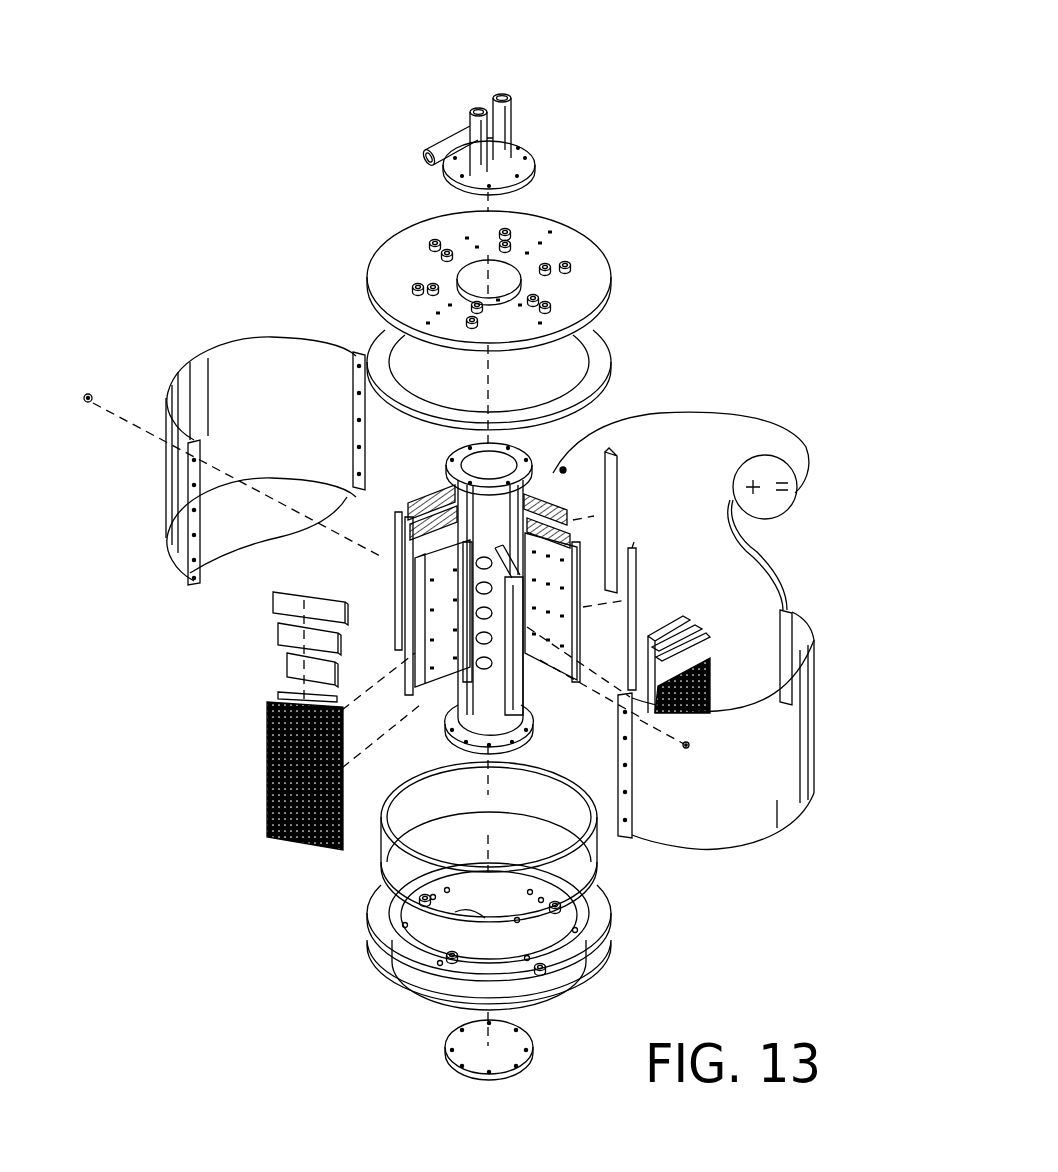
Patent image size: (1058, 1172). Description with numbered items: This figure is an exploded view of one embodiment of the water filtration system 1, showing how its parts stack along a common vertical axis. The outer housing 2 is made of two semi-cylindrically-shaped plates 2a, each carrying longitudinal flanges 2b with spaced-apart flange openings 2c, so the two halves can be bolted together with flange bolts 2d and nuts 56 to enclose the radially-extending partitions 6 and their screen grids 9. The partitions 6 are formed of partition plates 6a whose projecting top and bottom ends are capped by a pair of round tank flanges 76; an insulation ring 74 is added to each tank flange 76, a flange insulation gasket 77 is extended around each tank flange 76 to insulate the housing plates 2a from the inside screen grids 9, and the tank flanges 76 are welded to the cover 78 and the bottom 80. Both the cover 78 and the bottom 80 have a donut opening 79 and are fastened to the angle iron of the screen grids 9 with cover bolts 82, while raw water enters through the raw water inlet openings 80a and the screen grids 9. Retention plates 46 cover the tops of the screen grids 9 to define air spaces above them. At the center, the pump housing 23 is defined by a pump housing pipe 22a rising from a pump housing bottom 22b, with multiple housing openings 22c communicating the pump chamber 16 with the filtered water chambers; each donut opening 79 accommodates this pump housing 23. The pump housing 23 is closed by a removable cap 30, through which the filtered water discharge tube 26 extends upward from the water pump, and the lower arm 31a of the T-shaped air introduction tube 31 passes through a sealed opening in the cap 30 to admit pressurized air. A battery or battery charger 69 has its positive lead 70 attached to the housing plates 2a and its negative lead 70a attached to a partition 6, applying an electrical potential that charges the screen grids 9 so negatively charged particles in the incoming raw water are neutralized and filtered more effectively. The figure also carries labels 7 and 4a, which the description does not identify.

The water filtration system 1 is at (700, 173).
The housing 2 is at (485, 572).
The semi-cylindrically-shaped plate 2a is at (258, 435).
The longitudinal flange 2b is at (483, 625).
The flange opening 2c is at (357, 442).
The flange bolt 2d is at (690, 744).
The top plate bolt holes 4a is at (518, 224).
The partition 6 is at (545, 525).
The partition plate 6a is at (618, 500).
The mounting bolts 7 is at (420, 288).
The screen grid 9 is at (437, 497).
The pump chamber 16 is at (505, 430).
The pump housing pipe 22a is at (458, 700).
The pump housing bottom 22b is at (500, 1060).
The housing opening 22c is at (490, 640).
The pump housing 23 is at (510, 480).
The filtered water discharge tube 26 is at (505, 116).
The cap 30 is at (528, 160).
The air introduction tube 31 is at (438, 163).
The lower arm 31a is at (478, 108).
The retention plate 46 is at (283, 662).
The nut 56 is at (88, 405).
The battery or battery charger 69 is at (800, 495).
The positive lead 70 is at (710, 490).
The negative lead 70a is at (568, 468).
The insulation ring 74 is at (600, 349).
The tank flange 76 is at (413, 974).
The flange insulation gasket 77 is at (565, 795).
The cover 78 is at (488, 263).
The donut opening 79 is at (498, 302).
The bottom 80 is at (515, 929).
The raw water inlet opening 80a is at (421, 900).
The cover bolt 82 is at (455, 230).